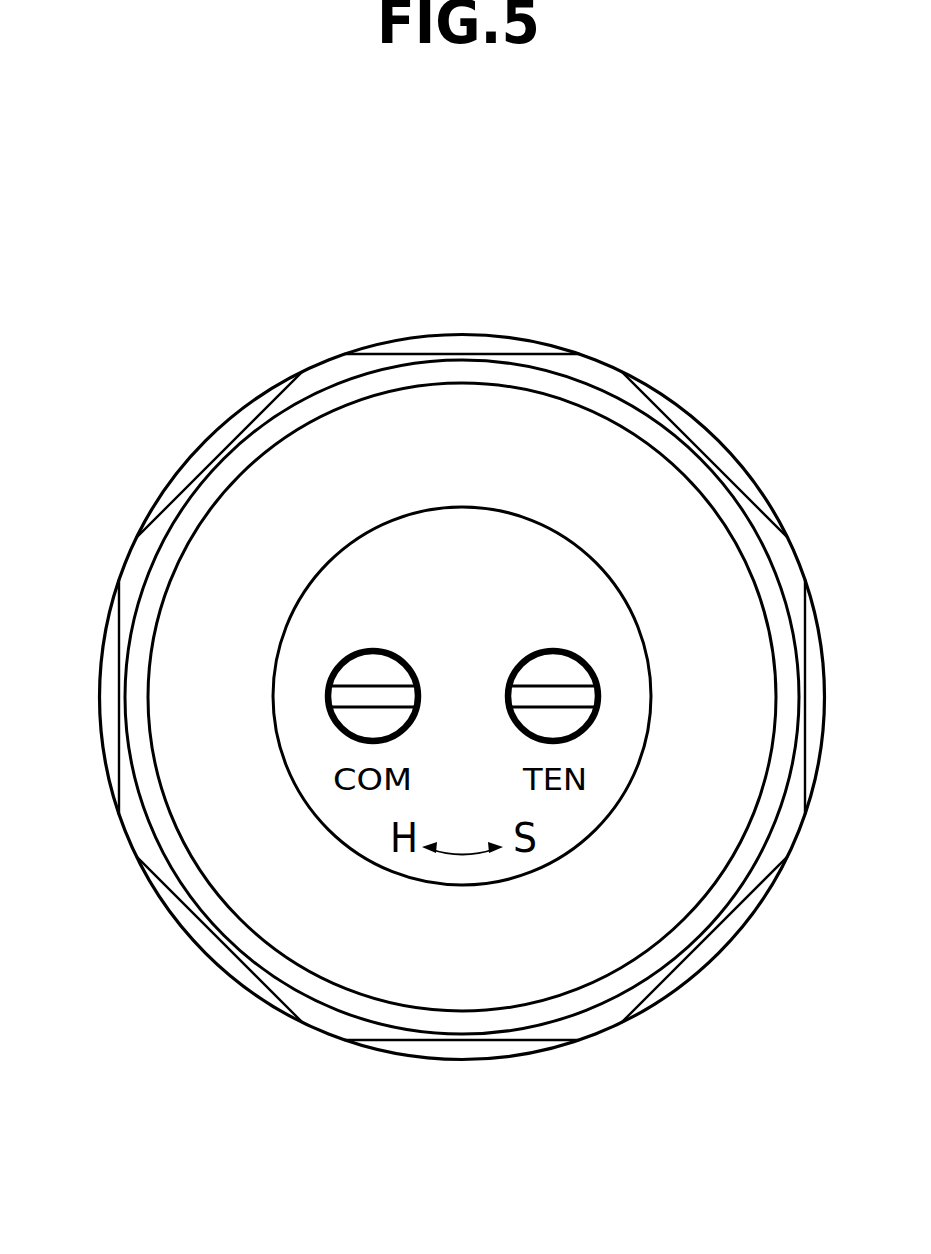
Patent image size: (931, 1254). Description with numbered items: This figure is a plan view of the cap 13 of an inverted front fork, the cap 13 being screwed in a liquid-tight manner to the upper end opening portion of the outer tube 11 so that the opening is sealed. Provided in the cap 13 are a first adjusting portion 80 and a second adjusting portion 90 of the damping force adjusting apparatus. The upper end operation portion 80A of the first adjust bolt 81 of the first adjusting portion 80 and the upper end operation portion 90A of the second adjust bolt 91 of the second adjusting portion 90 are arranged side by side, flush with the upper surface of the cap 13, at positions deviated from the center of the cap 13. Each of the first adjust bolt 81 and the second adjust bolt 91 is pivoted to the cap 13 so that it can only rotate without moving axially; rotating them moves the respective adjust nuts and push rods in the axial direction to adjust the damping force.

The outer tube 11 is at (130, 550).
The cap 13 is at (263, 500).
The first adjusting portion 80 is at (578, 599).
The first adjust bolt 81 is at (554, 673).
The upper end operation portion 80A is at (572, 673).
The second adjusting portion 90 is at (391, 585).
The second adjust bolt 91 is at (377, 670).
The upper end operation portion 90A is at (352, 674).